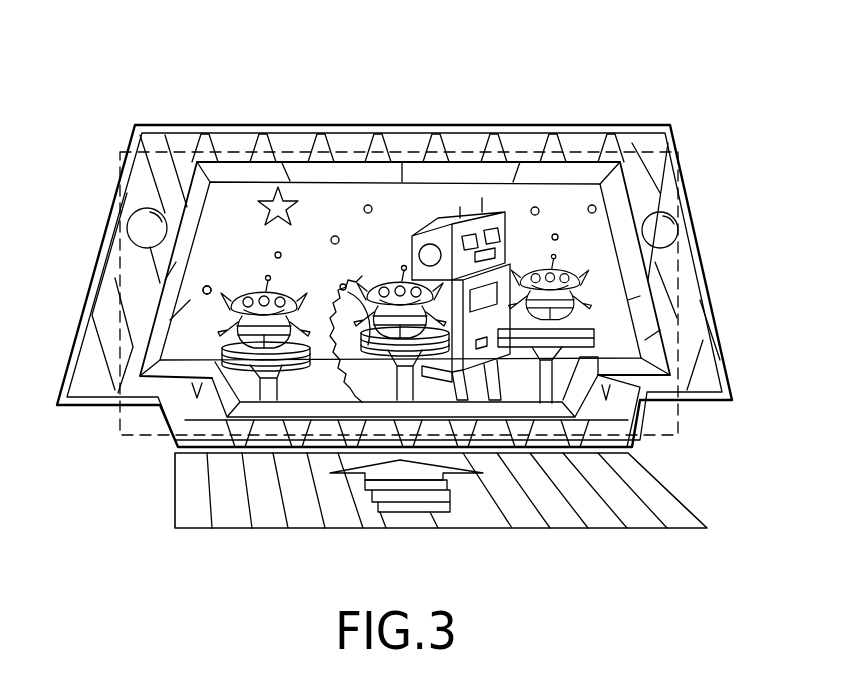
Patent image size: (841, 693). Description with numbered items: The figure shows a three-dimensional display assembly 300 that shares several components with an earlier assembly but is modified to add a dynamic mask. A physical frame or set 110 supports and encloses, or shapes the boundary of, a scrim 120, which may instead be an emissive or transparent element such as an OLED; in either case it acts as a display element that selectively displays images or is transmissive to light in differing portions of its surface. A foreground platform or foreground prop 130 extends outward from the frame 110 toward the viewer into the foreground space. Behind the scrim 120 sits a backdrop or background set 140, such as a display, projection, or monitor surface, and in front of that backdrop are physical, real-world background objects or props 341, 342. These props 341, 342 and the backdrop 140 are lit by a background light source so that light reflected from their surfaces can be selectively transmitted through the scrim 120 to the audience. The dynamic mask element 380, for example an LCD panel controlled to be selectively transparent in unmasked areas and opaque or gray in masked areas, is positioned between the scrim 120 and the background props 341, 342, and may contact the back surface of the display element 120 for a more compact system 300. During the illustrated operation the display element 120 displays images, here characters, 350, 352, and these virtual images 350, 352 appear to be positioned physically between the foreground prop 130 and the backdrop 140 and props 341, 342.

The 3D display assembly 300 is at (118, 107).
The physical frame or set 110 is at (168, 125).
The scrim 120 is at (223, 182).
The foreground platform or foreground prop 130 is at (174, 515).
The backdrop or background set 140 is at (193, 288).
The background object or prop 341 is at (400, 368).
The background object or prop 342 is at (482, 388).
The image 350 is at (368, 333).
The image 352 is at (573, 348).
The dynamic mask element 380 is at (678, 413).